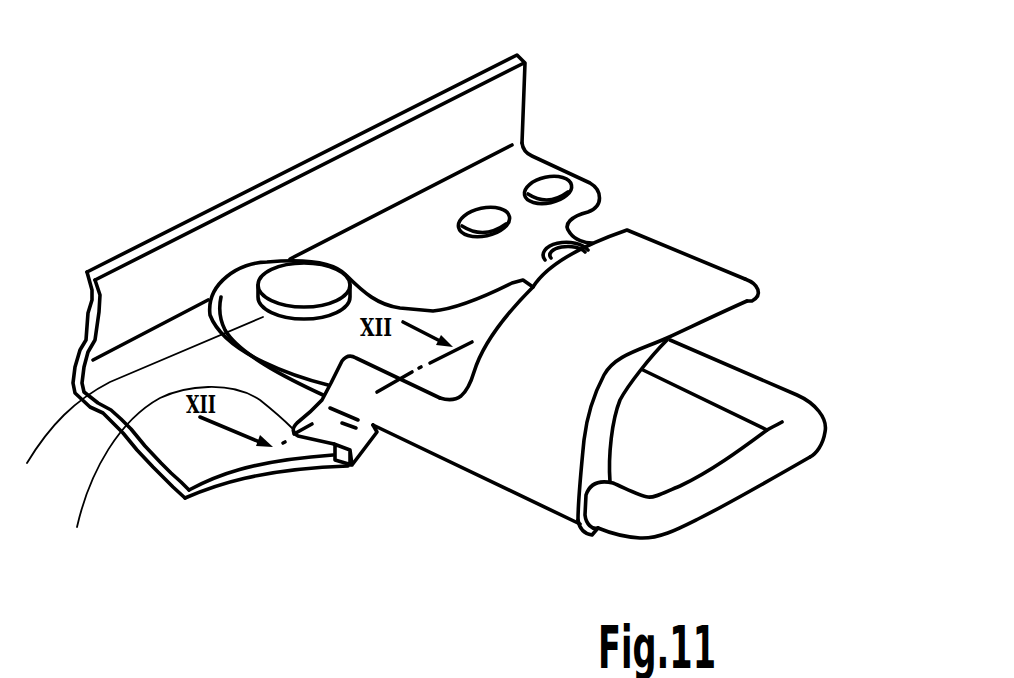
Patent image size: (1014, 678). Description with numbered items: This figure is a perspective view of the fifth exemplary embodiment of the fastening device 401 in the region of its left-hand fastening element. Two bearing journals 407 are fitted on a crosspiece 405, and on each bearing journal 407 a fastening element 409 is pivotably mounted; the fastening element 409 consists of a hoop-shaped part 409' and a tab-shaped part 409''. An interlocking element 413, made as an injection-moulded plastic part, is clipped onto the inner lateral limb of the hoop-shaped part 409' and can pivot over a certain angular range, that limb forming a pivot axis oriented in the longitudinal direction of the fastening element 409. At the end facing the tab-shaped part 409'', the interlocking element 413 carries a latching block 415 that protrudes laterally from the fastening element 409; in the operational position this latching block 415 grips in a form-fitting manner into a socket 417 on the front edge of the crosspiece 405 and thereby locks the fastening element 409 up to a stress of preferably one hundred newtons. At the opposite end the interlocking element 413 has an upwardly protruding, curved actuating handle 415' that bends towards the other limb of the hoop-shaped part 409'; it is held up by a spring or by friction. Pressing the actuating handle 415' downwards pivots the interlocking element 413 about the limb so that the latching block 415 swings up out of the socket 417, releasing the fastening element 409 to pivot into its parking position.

The fastening device 401 is at (158, 178).
The crosspiece 405 is at (500, 173).
The bearing journal 407 is at (305, 287).
The fastening element 409 is at (776, 360).
The hoop-shaped part 409' is at (738, 490).
The tab-shaped part 409'' is at (140, 408).
The interlocking element 413 is at (515, 510).
The latching block 415 is at (377, 504).
The actuating handle 415' is at (517, 395).
The socket 417 is at (181, 475).